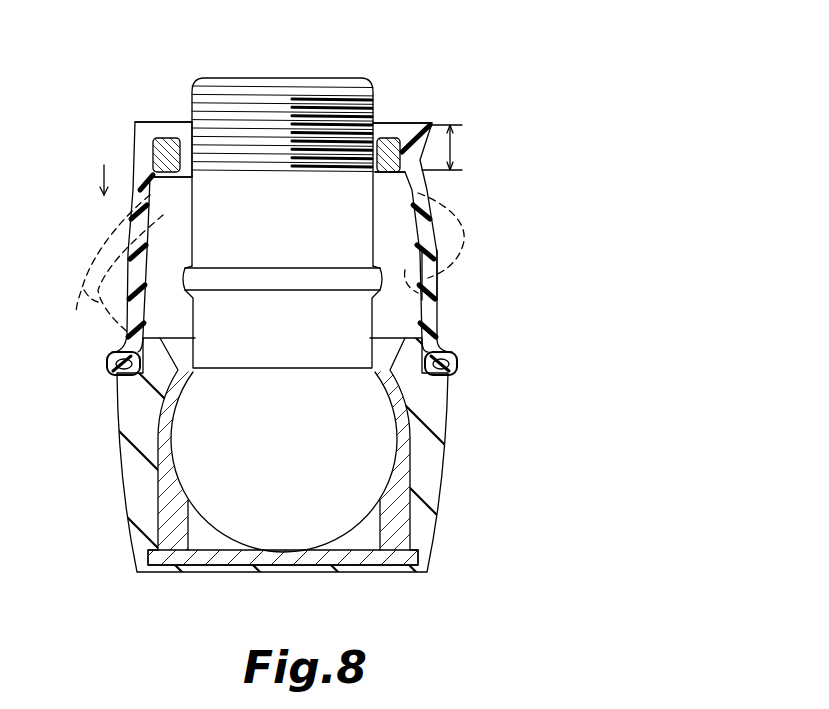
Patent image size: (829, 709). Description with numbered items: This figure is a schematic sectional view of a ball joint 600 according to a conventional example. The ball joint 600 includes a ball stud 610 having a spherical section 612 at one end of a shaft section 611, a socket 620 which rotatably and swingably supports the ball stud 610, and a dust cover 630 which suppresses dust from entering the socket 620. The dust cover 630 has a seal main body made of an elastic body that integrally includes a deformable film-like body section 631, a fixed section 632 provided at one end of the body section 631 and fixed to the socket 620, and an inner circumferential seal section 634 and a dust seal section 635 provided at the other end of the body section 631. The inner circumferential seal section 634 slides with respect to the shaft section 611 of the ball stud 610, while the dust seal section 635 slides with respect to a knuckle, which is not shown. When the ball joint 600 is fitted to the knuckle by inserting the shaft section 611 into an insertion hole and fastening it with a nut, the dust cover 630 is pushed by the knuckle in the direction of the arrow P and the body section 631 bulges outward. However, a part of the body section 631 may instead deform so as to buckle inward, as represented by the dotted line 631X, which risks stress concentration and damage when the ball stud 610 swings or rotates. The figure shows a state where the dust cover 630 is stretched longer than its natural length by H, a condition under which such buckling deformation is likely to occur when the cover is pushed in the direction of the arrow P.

The ball joint 600 is at (452, 105).
The ball stud 610 is at (383, 102).
The shaft section 611 is at (222, 180).
The spherical section 612 is at (190, 427).
The socket 620 is at (447, 537).
The dust cover 630 is at (443, 307).
The body section 631 is at (438, 263).
The dotted line representing buckled body section 631X is at (453, 200).
The fixed section 632 is at (458, 360).
The inner circumferential seal section 634 is at (192, 123).
The dust seal section 635 is at (137, 127).
The arrow P is at (102, 168).
The stretch amount H is at (447, 147).